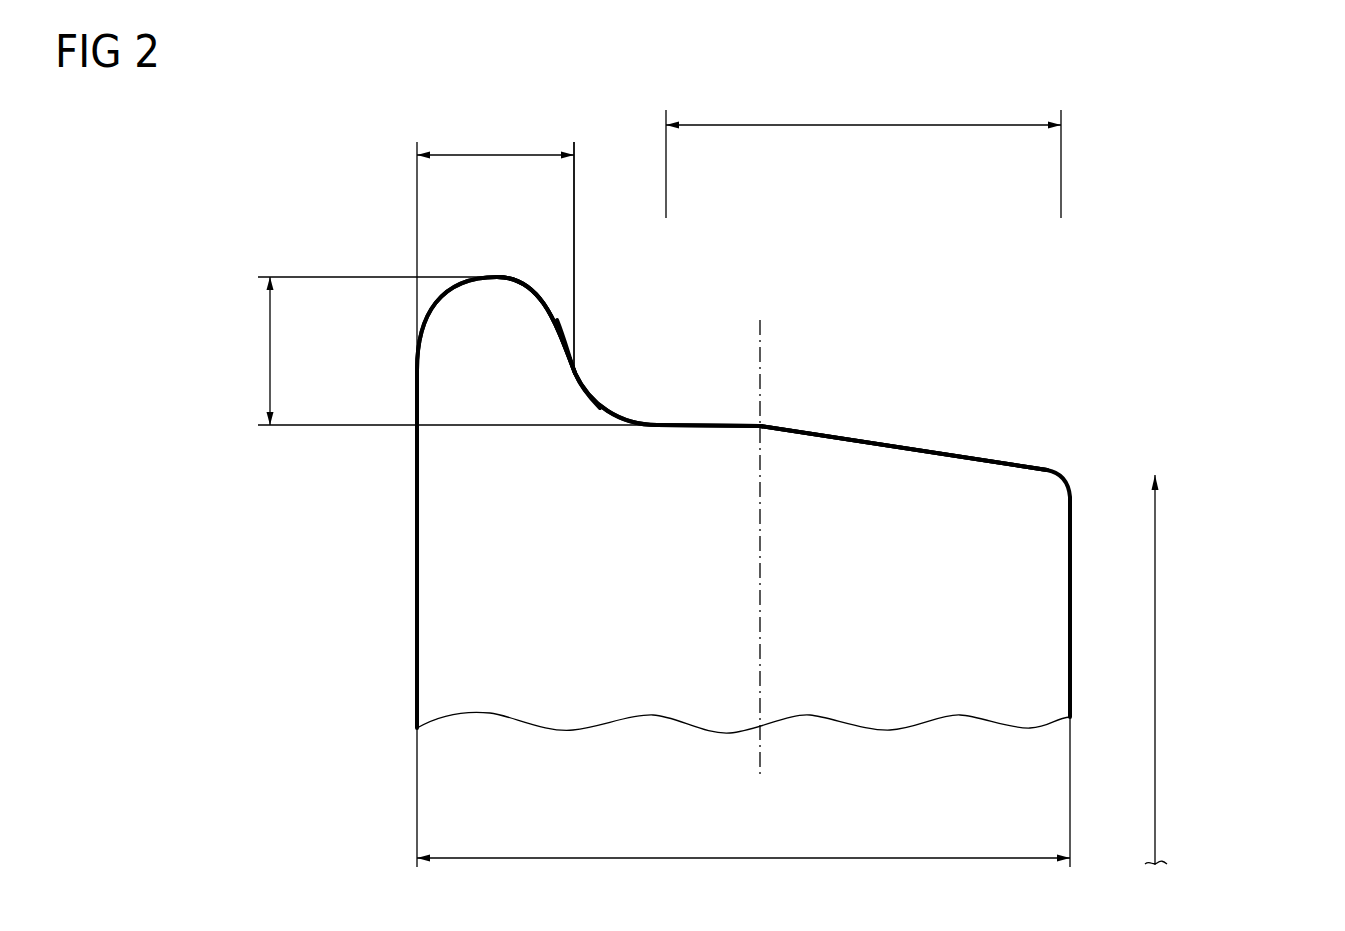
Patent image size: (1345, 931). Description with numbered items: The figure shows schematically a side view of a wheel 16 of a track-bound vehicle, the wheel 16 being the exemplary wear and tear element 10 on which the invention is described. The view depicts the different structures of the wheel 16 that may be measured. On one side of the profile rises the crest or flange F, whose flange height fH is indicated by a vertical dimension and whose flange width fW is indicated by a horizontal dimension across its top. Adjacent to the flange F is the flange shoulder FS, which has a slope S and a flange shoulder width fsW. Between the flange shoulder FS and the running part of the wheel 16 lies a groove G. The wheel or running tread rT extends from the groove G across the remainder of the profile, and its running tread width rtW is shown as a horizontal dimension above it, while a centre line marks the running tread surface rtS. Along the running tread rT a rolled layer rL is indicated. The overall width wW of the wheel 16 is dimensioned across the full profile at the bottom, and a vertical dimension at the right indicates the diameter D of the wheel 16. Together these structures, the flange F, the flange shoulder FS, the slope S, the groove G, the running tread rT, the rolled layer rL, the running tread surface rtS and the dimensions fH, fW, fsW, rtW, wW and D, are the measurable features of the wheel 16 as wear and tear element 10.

The wear and tear element 10 is at (865, 467).
The wheel 16 is at (1160, 310).
The flange F is at (427, 430).
The flange shoulder FS is at (560, 327).
The groove G is at (605, 402).
The slope S is at (560, 395).
The rolled layer rL is at (955, 452).
The running tread rT is at (900, 450).
The running tread surface rtS is at (759, 529).
The flange width fW is at (495, 489).
The flange shoulder width fsW is at (602, 257).
The running tread width rtW is at (863, 164).
The flange height fH is at (500, 351).
The width wW is at (743, 792).
The diameter D is at (1155, 612).